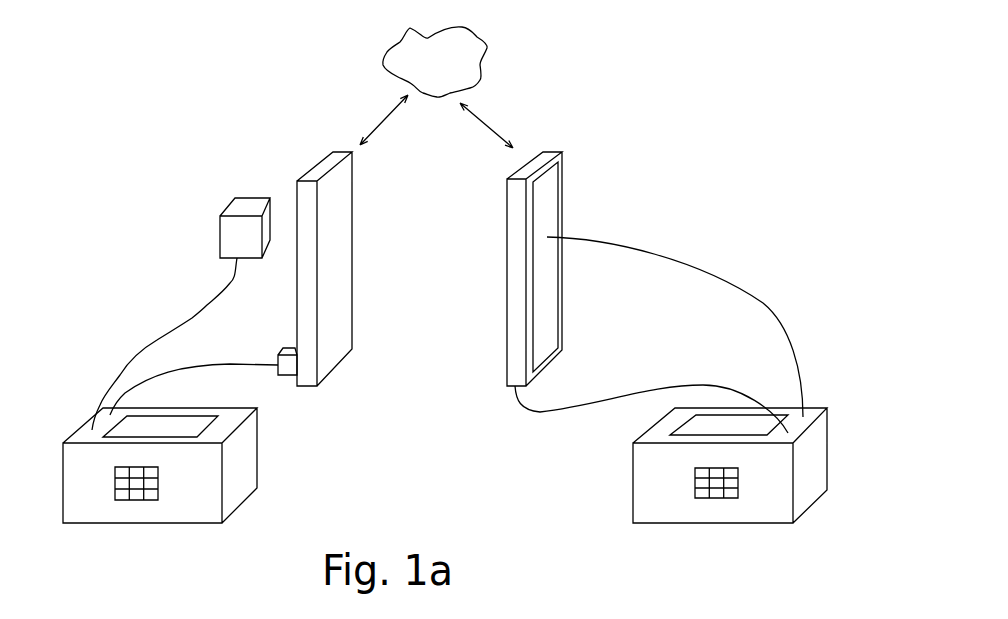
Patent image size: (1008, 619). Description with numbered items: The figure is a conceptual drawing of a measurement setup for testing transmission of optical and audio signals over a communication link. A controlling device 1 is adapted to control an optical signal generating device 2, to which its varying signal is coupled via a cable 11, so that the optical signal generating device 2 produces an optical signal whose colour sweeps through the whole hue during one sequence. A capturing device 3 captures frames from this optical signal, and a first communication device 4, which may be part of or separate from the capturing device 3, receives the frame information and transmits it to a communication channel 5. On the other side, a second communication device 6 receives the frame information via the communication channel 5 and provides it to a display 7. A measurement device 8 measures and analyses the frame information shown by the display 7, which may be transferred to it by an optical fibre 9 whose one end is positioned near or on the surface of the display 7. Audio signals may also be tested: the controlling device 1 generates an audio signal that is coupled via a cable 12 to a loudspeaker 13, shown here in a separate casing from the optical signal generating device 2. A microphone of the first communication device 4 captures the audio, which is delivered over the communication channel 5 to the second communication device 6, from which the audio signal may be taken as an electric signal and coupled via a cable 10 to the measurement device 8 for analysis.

The controlling device 1 is at (257, 443).
The optical signal generating device 2 is at (227, 213).
The capturing device 3 is at (350, 278).
The first communication device 4 is at (323, 370).
The communication channel 5 is at (477, 35).
The second communication device 6 is at (548, 152).
The display 7 is at (547, 337).
The measurement device 8 is at (828, 428).
The optical fibre 9 is at (765, 310).
The cable 10 is at (707, 382).
The cable 11 is at (192, 318).
The cable 12 is at (203, 367).
The loudspeaker 13 is at (280, 352).